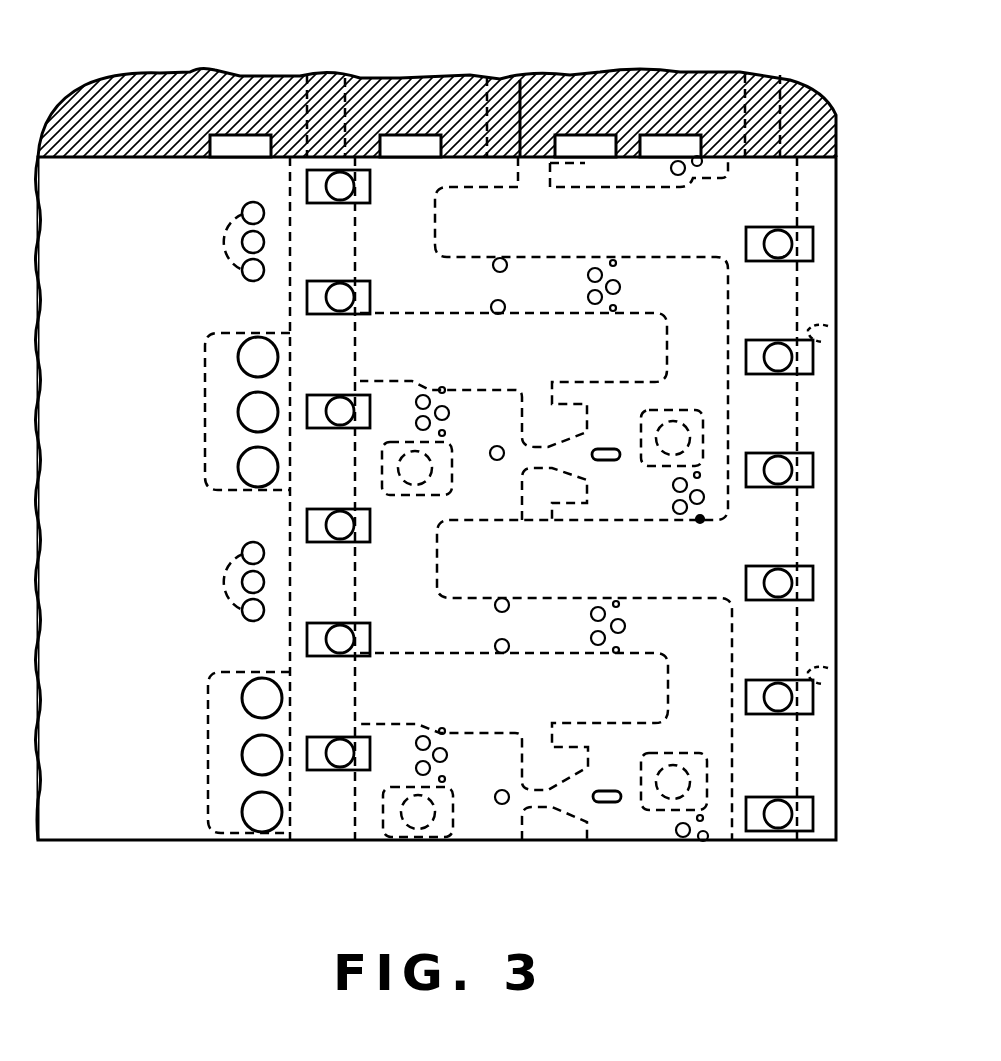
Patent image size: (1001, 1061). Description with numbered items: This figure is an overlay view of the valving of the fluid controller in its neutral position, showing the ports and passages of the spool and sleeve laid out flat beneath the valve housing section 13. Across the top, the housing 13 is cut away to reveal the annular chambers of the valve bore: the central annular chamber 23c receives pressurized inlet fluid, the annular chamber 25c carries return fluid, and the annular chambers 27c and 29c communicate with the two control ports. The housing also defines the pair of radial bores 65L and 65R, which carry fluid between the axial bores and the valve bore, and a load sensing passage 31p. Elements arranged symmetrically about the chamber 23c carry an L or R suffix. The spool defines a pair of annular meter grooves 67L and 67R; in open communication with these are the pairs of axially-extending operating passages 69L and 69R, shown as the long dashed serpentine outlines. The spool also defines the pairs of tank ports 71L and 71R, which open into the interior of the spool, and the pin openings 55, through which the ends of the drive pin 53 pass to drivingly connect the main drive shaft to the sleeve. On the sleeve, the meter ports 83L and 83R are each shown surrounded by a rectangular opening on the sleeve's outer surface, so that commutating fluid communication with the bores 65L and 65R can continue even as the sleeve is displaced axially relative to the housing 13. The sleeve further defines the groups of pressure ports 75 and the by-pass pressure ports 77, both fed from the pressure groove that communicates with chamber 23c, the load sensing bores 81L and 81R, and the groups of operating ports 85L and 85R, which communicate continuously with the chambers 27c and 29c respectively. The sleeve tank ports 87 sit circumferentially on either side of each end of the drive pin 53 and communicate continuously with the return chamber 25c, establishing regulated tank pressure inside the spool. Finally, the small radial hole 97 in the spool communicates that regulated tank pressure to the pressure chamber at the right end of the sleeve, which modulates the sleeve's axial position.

The valve housing section 13 is at (105, 103).
The radial bore 65L is at (340, 100).
The plug aperture 31p is at (510, 100).
The radial bore 65R is at (760, 100).
The annular chamber 25c is at (235, 150).
The annular chamber 27c is at (410, 150).
The annular chamber 23c is at (580, 150).
The annular chamber 29c is at (668, 150).
The meter port 83L is at (343, 298).
The meter port 83R is at (778, 246).
The operating passage 69L is at (432, 338).
The operating passage 69R is at (686, 568).
The load sensing bore 81L is at (497, 644).
The load sensing bore 81R is at (506, 270).
The group of pressure ports 75 is at (640, 293).
The pin opening 55 is at (208, 371).
The drive pin 53 is at (250, 412).
The tank port 87 is at (248, 477).
The group of operating ports 85L is at (455, 414).
The group of operating ports 85R is at (667, 498).
The tank port 71L is at (412, 482).
The tank port 71R is at (672, 418).
The by-pass pressure port 77 is at (605, 449).
The annular meter groove 67L is at (325, 600).
The annular meter groove 67R is at (768, 525).
The radial hole 97 is at (836, 672).